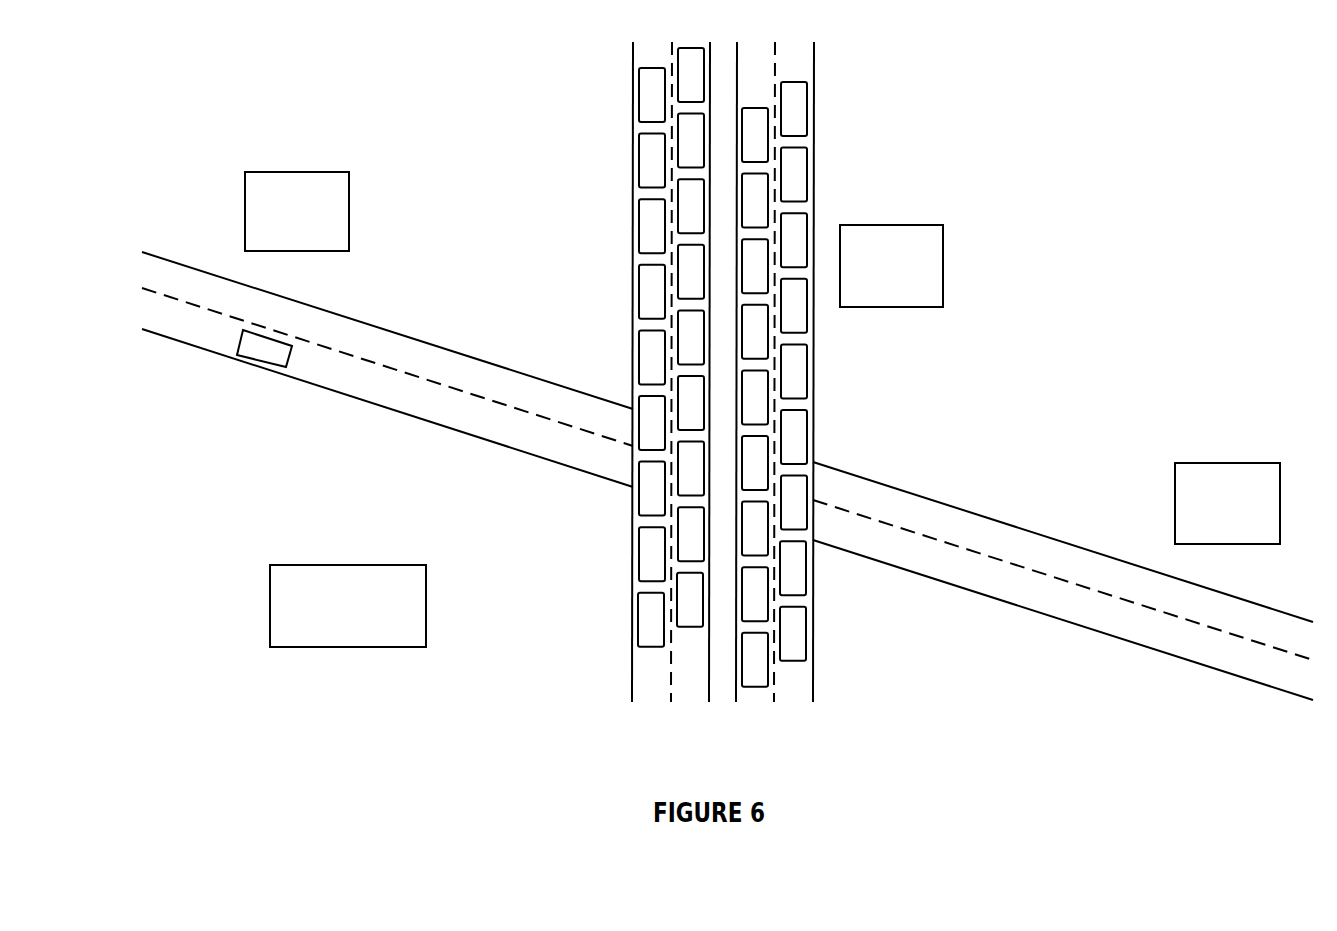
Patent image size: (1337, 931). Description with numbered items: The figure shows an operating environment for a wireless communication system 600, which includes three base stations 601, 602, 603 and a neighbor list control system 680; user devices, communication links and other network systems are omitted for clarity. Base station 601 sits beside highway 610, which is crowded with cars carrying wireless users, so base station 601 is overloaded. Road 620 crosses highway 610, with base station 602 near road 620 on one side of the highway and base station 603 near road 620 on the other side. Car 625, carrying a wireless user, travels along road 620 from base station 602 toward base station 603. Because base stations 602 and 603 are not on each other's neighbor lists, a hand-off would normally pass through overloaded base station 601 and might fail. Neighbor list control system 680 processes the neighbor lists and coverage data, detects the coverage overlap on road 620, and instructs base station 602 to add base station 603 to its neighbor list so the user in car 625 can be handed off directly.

The wireless communication system 600 is at (1142, 86).
The base station 601 is at (891, 266).
The base station 602 is at (297, 211).
The base station 603 is at (1227, 503).
The highway 610 is at (633, 68).
The road 620 is at (432, 346).
The car 625 is at (260, 363).
The neighbor list control system 680 is at (348, 606).